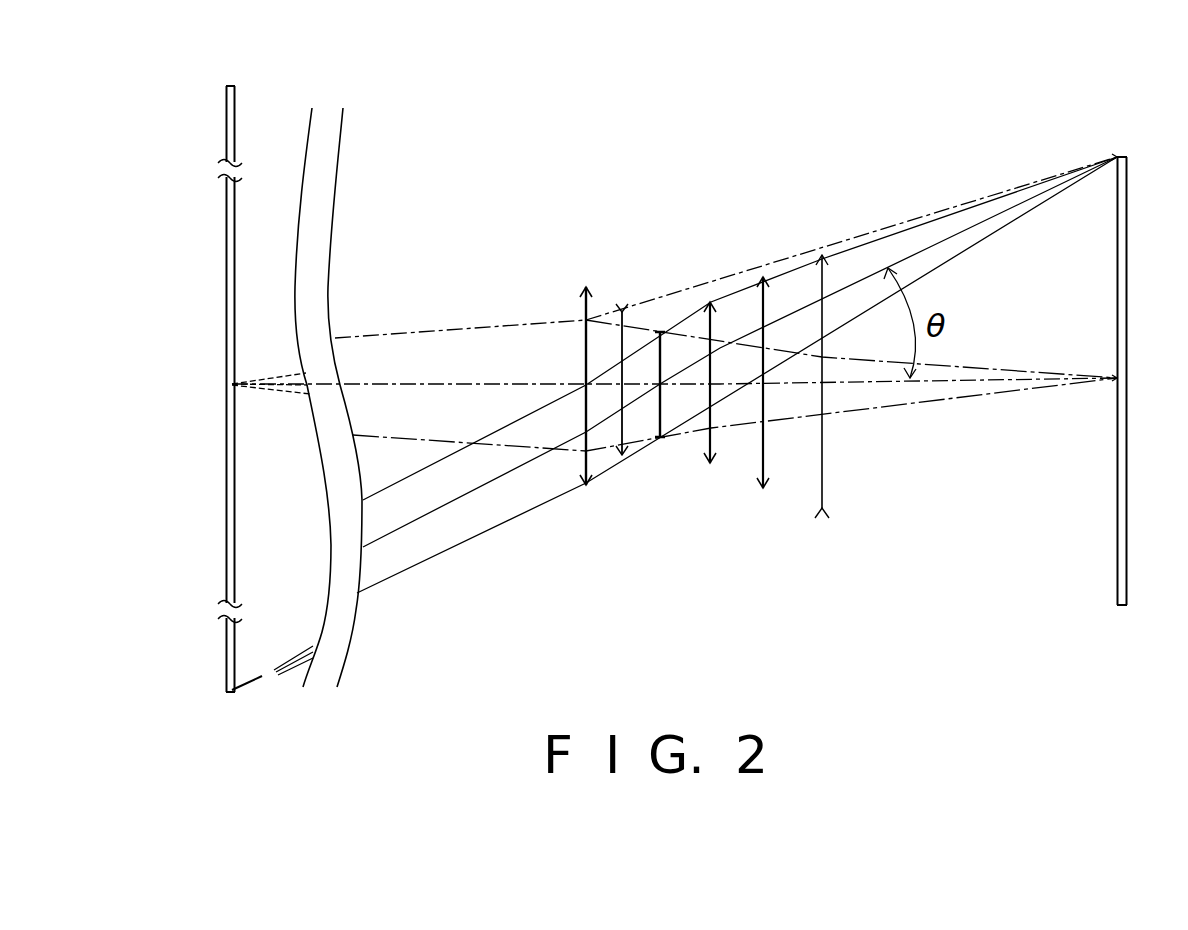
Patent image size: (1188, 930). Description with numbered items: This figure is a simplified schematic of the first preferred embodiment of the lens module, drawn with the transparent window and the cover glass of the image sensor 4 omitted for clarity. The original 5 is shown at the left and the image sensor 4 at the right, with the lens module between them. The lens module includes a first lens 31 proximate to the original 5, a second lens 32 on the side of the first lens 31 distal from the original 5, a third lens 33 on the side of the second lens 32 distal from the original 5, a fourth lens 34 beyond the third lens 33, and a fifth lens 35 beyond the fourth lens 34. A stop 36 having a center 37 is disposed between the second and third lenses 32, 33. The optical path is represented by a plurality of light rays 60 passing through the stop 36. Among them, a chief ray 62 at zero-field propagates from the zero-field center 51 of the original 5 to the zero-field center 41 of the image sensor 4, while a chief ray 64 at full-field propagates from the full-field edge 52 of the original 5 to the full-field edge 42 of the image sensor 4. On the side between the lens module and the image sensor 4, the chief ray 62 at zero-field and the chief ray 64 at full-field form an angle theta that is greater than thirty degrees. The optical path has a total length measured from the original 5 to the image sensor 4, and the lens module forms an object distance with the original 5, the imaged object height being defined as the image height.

The original 5 is at (226, 233).
The zero-field (center) of the original 51 is at (233, 378).
The full-field (edge) of the original 52 is at (232, 692).
The image sensor 4 is at (1127, 283).
The zero-field (center) of the image sensor 41 is at (1116, 380).
The full-field (edge) of the image sensor 42 is at (1118, 157).
The first lens 31 is at (608, 368).
The second lens 32 is at (626, 393).
The third lens 33 is at (719, 330).
The fourth lens 34 is at (770, 305).
The fifth lens 35 is at (825, 284).
The stop 36 is at (664, 375).
The center of the stop 37 is at (660, 385).
The light rays 60 is at (416, 397).
The chief ray at zero-field 62 is at (450, 386).
The chief ray at full-field 64 is at (512, 470).